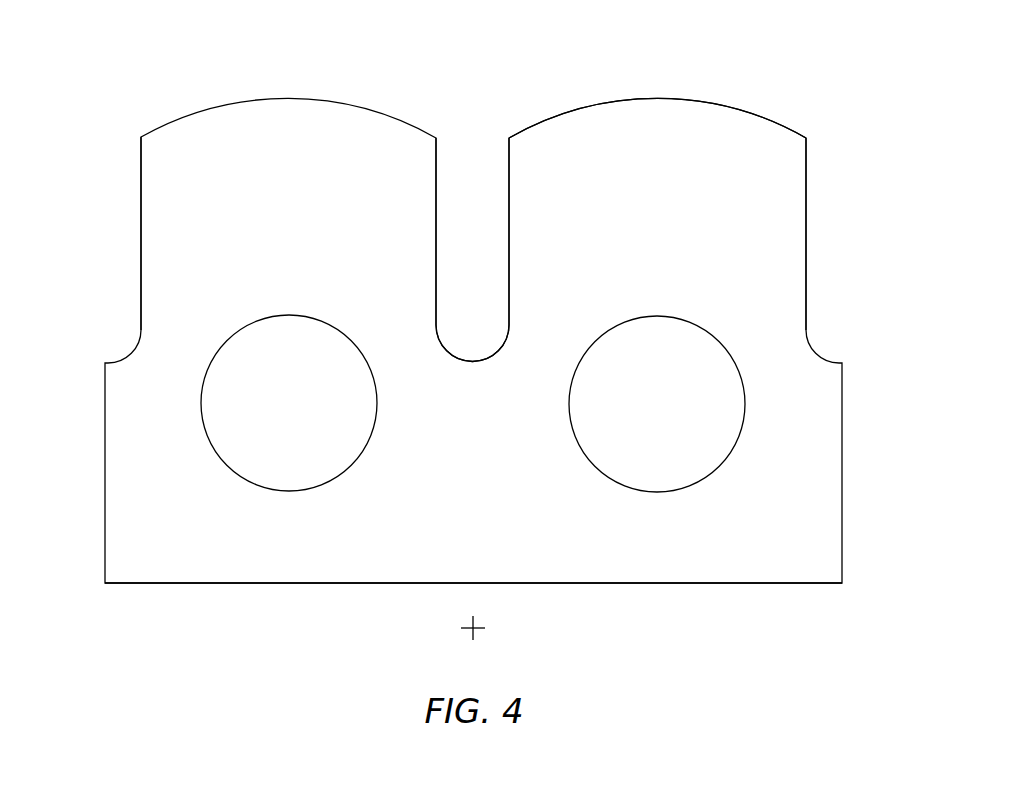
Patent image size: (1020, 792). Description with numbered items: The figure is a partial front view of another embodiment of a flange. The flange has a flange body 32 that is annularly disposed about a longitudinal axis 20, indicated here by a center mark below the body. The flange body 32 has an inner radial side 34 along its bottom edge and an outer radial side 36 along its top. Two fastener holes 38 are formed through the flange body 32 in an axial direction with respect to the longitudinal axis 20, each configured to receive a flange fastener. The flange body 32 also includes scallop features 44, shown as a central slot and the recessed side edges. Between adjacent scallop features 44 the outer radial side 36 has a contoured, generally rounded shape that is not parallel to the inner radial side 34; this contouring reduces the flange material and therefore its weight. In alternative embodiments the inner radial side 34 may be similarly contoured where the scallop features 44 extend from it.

The longitudinal axis 20 is at (476, 632).
The flange body 32 is at (808, 555).
The inner radial side 34 is at (277, 584).
The outer radial side 36 is at (659, 98).
The fastener hole 38 is at (695, 322).
The scallop feature 44 is at (472, 160).